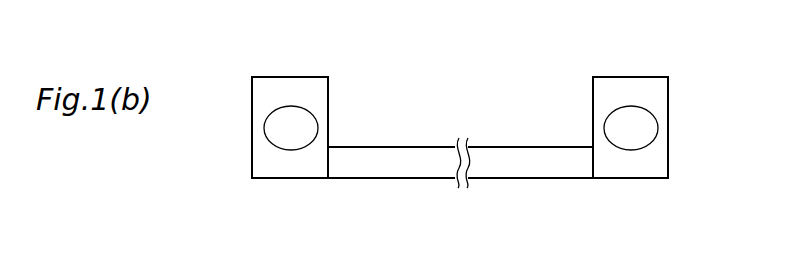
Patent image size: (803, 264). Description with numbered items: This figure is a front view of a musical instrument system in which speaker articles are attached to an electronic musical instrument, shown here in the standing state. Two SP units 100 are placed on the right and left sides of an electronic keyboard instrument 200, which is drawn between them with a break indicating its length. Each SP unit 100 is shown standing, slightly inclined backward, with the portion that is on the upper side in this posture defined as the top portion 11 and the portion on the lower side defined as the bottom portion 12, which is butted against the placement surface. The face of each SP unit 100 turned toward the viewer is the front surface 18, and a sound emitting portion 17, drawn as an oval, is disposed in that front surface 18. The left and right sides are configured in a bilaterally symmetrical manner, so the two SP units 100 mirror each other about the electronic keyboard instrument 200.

The SP unit 100 is at (303, 77).
The top portion 11 is at (278, 77).
The bottom portion 12 is at (278, 178).
The sound emitting portion 17 is at (266, 140).
The front surface 18 is at (270, 97).
The electronic keyboard instrument 200 is at (520, 147).